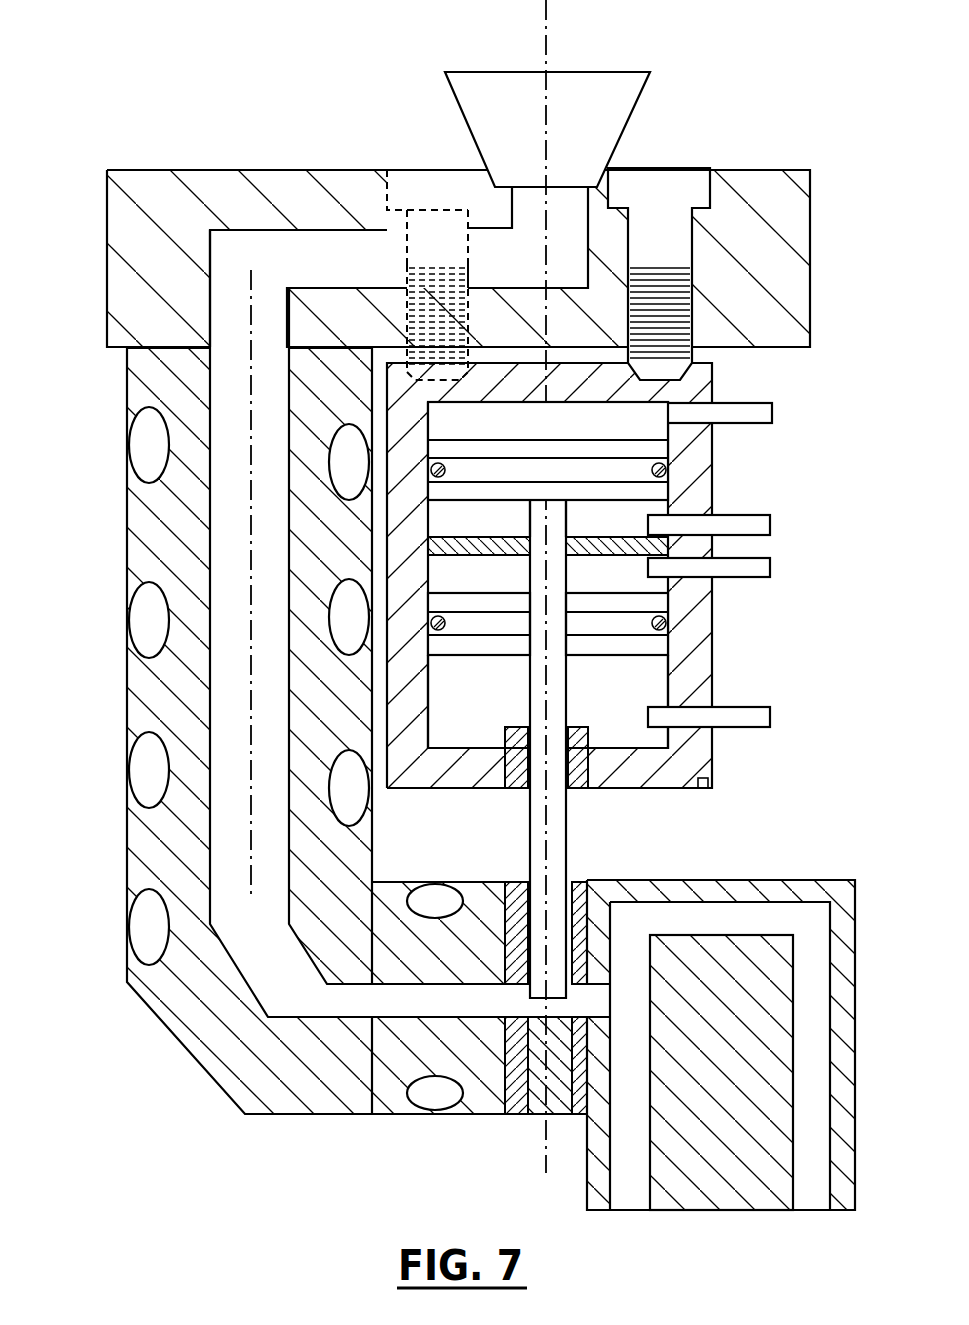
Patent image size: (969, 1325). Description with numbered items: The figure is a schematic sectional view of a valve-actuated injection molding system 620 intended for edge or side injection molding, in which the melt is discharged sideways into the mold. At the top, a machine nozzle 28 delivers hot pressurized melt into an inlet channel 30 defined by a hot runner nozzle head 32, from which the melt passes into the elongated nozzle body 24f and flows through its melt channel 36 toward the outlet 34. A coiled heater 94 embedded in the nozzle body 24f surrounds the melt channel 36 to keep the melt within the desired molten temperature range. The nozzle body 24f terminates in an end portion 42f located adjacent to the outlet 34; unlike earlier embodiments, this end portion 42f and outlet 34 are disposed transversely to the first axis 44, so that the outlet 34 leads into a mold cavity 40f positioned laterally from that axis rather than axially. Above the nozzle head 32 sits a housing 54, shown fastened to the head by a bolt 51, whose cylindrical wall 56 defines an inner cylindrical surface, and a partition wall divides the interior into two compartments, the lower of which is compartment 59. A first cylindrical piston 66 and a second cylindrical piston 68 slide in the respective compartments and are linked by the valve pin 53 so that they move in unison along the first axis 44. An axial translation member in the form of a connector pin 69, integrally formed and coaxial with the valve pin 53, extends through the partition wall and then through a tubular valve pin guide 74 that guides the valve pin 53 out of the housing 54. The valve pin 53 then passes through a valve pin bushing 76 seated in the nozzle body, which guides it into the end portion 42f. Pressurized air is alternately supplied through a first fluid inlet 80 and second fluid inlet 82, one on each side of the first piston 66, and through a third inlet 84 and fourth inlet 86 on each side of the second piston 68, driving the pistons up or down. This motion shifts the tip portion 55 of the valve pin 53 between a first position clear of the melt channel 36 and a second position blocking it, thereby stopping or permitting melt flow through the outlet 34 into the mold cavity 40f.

The valve-actuated injection molding system 620 is at (243, 118).
The first axis 44 is at (545, 17).
The machine nozzle 28 is at (608, 136).
The inlet channel 30 is at (523, 247).
The bolt 51 is at (673, 240).
The hot runner nozzle head 32 is at (123, 283).
The nozzle body 24f is at (160, 553).
The coiled heater 94 is at (146, 931).
The melt channel 36 is at (225, 861).
The tip portion 55 is at (540, 960).
The cylindrical wall 56 is at (700, 440).
The compartment 59 is at (650, 672).
The housing 54 is at (705, 785).
The tubular valve pin guide 74 is at (640, 753).
The first fluid inlet 80 is at (733, 406).
The second fluid inlet 82 is at (770, 523).
The third inlet 84 is at (770, 566).
The fourth inlet 86 is at (770, 716).
The first cylindrical piston 66 is at (668, 487).
The connector pin 69 is at (528, 518).
The second cylindrical piston 68 is at (660, 623).
The valve pin 53 is at (567, 825).
The valve pin bushing 76 is at (513, 882).
The end portion 42f is at (523, 1002).
The mold cavity 40f is at (817, 917).
The outlet 34 is at (590, 987).